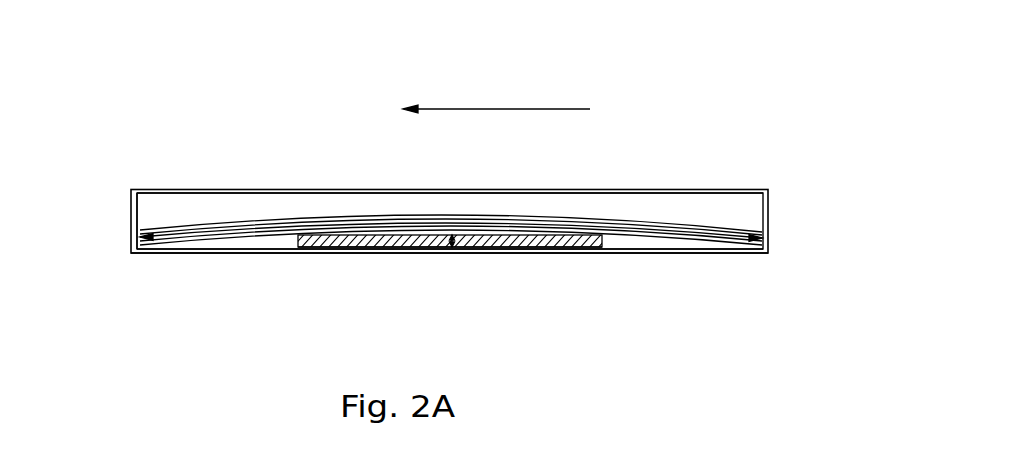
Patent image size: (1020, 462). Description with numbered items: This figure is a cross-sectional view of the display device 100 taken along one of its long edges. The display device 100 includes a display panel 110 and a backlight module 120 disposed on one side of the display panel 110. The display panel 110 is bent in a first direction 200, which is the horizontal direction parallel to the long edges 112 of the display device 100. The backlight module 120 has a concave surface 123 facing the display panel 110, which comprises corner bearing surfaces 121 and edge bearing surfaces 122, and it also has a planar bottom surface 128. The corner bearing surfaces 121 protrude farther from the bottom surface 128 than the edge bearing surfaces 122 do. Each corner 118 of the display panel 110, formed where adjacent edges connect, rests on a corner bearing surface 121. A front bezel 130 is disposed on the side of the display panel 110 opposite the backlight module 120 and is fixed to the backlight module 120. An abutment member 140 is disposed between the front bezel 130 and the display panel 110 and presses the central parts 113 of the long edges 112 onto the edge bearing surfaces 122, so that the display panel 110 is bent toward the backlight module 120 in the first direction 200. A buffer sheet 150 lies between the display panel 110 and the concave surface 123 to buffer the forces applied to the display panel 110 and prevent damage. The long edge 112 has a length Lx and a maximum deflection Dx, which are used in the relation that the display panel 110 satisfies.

The display device 100 is at (97, 88).
The display panel 110 is at (700, 259).
The long edges 112 is at (246, 244).
The central parts of the long edges 113 is at (415, 236).
The corner 118 is at (160, 247).
The backlight module 120 is at (147, 210).
The corner bearing surfaces 121 is at (327, 103).
The edge bearing surfaces 122 is at (440, 222).
The concave surface 123 is at (451, 150).
The bottom surface 128 is at (545, 190).
The front bezel 130 is at (645, 253).
The abutment member 140 is at (541, 247).
The buffer sheet 150 is at (727, 232).
The first direction 200 is at (502, 108).
The length of the long edge Lx is at (650, 228).
The maximum deflection of the long edge Dx is at (454, 240).